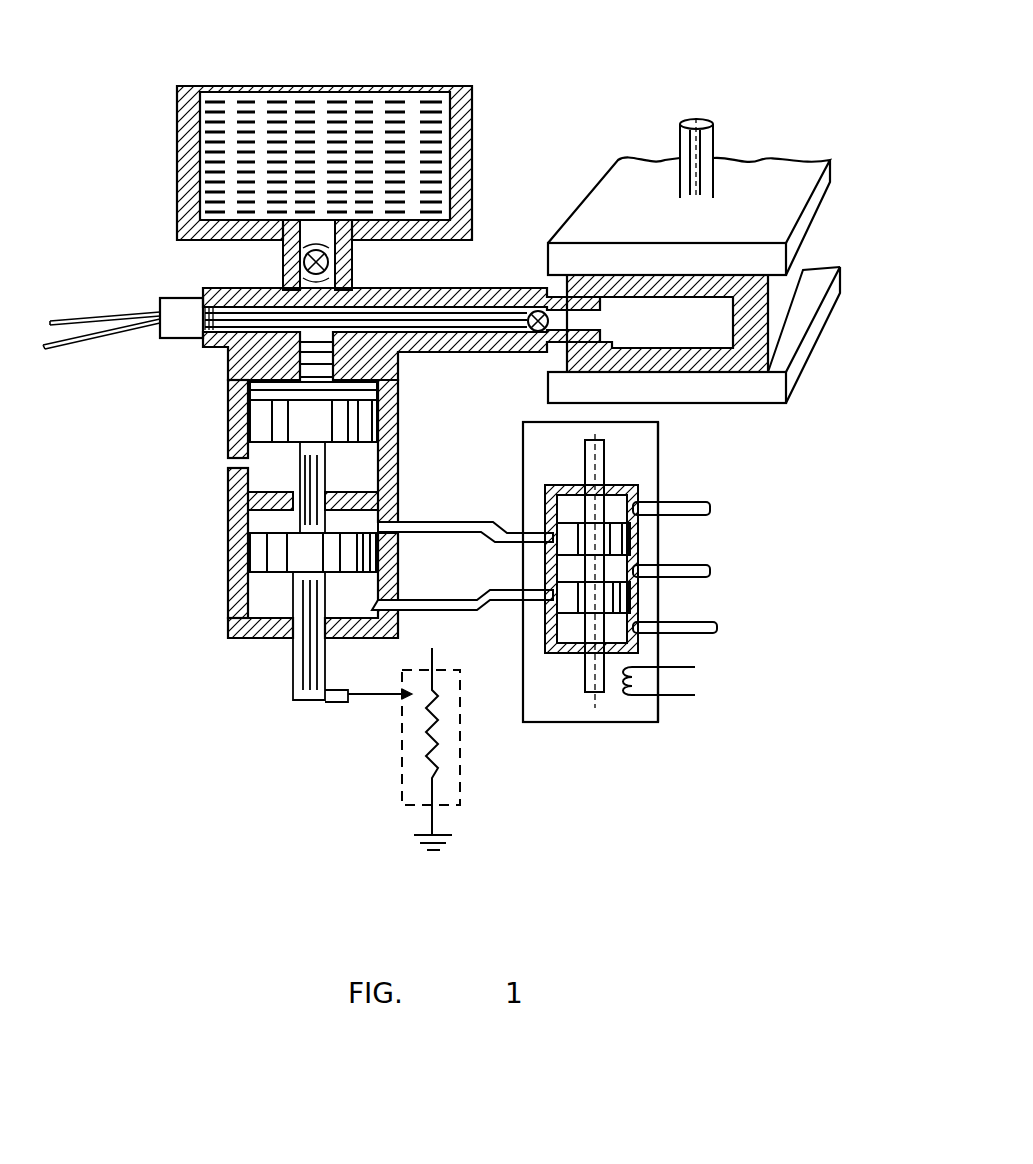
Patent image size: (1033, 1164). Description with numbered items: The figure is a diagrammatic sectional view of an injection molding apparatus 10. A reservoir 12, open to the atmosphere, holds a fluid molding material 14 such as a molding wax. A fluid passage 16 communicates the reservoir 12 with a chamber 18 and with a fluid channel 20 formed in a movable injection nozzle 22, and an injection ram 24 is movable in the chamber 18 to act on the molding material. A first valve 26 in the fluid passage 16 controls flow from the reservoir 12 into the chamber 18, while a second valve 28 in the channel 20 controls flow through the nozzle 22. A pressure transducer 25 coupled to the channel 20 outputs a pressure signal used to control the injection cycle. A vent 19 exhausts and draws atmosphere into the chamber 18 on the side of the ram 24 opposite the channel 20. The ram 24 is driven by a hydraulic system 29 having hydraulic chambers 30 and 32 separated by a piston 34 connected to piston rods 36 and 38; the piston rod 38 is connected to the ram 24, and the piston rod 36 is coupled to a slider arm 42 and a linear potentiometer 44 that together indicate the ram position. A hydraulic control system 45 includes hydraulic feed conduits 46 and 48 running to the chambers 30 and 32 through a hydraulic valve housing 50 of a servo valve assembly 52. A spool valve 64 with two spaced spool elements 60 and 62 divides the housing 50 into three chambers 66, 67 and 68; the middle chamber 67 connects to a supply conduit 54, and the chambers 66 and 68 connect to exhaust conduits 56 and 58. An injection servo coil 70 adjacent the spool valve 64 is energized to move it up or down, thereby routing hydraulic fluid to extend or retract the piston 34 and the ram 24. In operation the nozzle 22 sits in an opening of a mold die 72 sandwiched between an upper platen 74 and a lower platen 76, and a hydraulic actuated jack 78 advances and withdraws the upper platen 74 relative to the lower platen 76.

The injection molding apparatus 10 is at (163, 270).
The reservoir 12 is at (478, 96).
The fluid molding material 14 is at (237, 137).
The fluid passage 16 is at (345, 276).
The chamber 18 is at (398, 392).
The vent 19 is at (226, 462).
The fluid channel 20 is at (452, 312).
The injection nozzle 22 is at (548, 290).
The injection ram 24 is at (398, 428).
The pressure transducer 25 is at (160, 300).
The first valve 26 is at (283, 262).
The second valve 28 is at (548, 342).
The hydraulic system 29 is at (226, 620).
The hydraulic chamber 30 is at (265, 525).
The hydraulic chamber 32 is at (257, 590).
The piston 34 is at (235, 556).
The piston rod 36 is at (293, 686).
The piston rod 38 is at (228, 437).
The slider arm 42 is at (408, 695).
The linear potentiometer 44 is at (460, 772).
The hydraulic control system 45 is at (645, 730).
The hydraulic feed conduit 46 is at (422, 512).
The hydraulic feed conduit 48 is at (412, 598).
The hydraulic valve housing 50 is at (665, 680).
The servo valve assembly 52 is at (662, 445).
The supply conduit 54 is at (712, 578).
The exhaust conduit 56 is at (712, 512).
The exhaust conduit 58 is at (717, 630).
The spool element 60 is at (655, 540).
The spool element 62 is at (580, 615).
The spool valve 64 is at (592, 695).
The chamber 66 is at (645, 484).
The chamber 67 is at (562, 580).
The chamber 68 is at (580, 655).
The injection servo coil 70 is at (686, 704).
The mold die 72 is at (803, 272).
The upper platen 74 is at (770, 198).
The lower platen 76 is at (790, 392).
The hydraulic actuated jack 78 is at (730, 118).